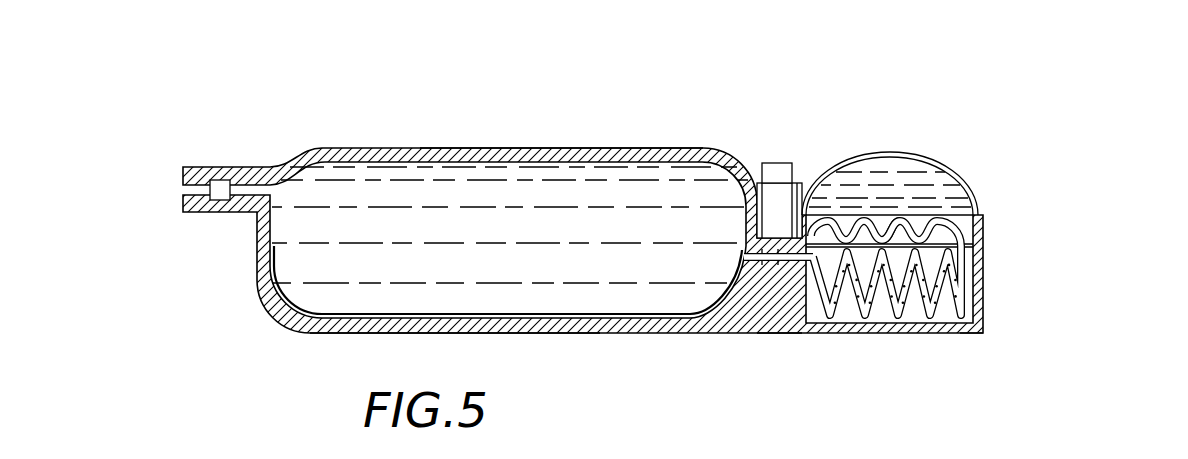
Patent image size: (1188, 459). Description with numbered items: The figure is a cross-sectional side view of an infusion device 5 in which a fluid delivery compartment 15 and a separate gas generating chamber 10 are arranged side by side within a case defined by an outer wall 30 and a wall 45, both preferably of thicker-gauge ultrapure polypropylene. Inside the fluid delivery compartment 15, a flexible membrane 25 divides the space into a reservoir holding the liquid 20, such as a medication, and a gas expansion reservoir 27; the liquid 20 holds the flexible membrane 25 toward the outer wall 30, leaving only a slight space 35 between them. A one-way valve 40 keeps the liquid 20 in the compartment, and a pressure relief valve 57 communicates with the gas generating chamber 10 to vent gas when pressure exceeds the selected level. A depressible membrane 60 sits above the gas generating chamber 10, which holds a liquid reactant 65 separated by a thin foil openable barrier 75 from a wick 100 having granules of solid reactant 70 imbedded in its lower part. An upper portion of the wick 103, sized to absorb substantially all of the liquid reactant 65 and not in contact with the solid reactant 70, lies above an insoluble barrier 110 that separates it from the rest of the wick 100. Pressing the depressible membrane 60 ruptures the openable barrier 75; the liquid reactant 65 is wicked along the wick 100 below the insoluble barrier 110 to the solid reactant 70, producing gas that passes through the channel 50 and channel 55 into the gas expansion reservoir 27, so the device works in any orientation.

The infusion device 5 is at (596, 82).
The gas generating chamber 10 is at (1058, 98).
The fluid delivery compartment 15 is at (263, 100).
The liquid 20 is at (330, 190).
The flexible membrane 25 is at (272, 275).
The gas expansion reservoir 27 is at (460, 185).
The outer wall 30 is at (348, 334).
The space 35 is at (722, 305).
The one-way valve 40 is at (220, 181).
The wall 45 is at (612, 151).
The channel 50 is at (752, 262).
The channel 55 is at (765, 264).
The pressure relief valve 57 is at (782, 163).
The depressible membrane 60 is at (852, 153).
The liquid reactant 65 is at (880, 166).
The solid reactant 70 is at (840, 303).
The openable barrier 75 is at (958, 207).
The wick 100 is at (963, 292).
The upper portion of the wick 103 is at (920, 221).
The insoluble barrier 110 is at (887, 233).